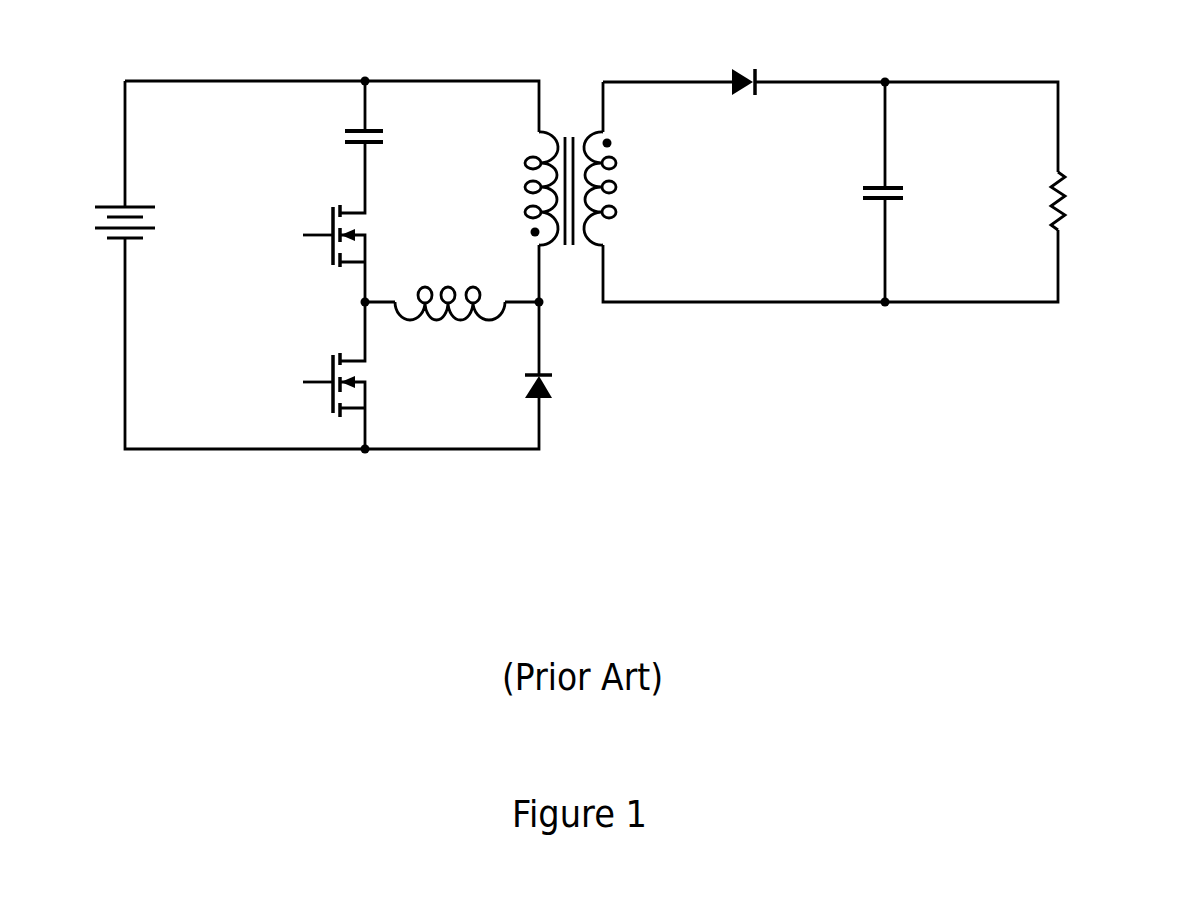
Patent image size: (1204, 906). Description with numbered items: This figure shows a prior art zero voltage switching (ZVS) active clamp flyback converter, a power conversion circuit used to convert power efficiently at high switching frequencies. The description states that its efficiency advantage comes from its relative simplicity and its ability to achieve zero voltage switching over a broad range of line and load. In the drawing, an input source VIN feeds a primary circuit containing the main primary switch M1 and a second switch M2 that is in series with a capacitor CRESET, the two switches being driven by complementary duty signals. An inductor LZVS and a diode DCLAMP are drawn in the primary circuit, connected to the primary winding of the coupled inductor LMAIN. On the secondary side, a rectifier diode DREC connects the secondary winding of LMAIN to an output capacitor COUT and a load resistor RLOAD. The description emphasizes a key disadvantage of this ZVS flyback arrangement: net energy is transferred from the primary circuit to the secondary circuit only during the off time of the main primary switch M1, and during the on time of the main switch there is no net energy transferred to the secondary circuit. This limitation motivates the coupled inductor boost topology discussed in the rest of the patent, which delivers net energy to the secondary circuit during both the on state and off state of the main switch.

The input voltage source VIN is at (94, 225).
The reset capacitor CRESET is at (323, 136).
The auxiliary switch transistor M2 is at (316, 236).
The main primary switch M1 is at (340, 385).
The zero-voltage-switching inductor LZVS is at (450, 329).
The clamp diode DCLAMP is at (592, 388).
The main transformer LMAIN is at (570, 140).
The rectifier diode DREC is at (750, 56).
The output capacitor COUT is at (916, 194).
The load resistor RLOAD is at (1104, 201).